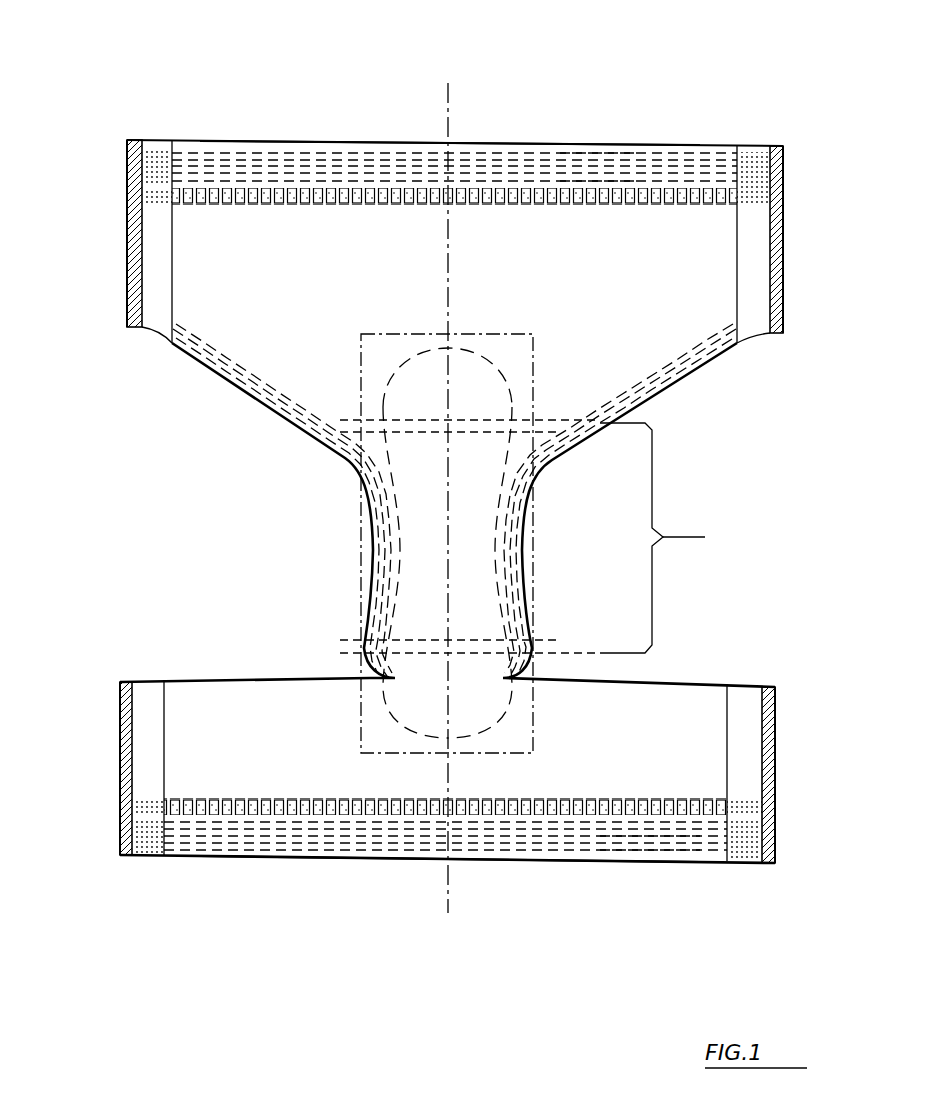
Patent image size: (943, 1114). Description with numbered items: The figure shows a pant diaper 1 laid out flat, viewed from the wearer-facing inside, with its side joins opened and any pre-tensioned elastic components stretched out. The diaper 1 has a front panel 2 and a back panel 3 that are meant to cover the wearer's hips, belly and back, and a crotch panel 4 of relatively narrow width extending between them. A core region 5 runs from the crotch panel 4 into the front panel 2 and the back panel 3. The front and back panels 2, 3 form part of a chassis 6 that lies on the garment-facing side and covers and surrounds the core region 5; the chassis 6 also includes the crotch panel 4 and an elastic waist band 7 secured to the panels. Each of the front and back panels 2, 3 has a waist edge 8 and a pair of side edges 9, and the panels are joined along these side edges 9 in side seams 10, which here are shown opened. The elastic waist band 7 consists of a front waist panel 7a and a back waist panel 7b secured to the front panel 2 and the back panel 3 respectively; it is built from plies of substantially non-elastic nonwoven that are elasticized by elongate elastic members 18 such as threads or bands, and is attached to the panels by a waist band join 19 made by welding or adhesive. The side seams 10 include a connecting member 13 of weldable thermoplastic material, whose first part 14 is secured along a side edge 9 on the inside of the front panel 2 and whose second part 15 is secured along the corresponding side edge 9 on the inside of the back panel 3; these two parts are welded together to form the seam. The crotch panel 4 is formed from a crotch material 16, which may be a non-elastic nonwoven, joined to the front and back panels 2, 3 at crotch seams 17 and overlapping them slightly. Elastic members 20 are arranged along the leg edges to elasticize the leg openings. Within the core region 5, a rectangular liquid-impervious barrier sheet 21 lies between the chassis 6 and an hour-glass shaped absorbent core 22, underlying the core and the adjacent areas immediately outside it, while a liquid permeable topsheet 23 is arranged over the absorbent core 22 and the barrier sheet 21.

The pant diaper 1 is at (746, 66).
The front panel 2 is at (600, 780).
The back panel 3 is at (655, 240).
The crotch panel 4 is at (652, 538).
The core region 5 is at (520, 356).
The chassis 6 is at (220, 313).
The elastic waist band 7 is at (211, 148).
The front waist panel 7a is at (210, 842).
The back waist panel 7b is at (491, 160).
The waist edge 8 is at (260, 130).
The side edges 9 is at (118, 190).
The side seams 10 is at (130, 152).
The connecting member 13 is at (160, 232).
The first part 14 is at (150, 788).
The second part 15 is at (150, 278).
The crotch material 16 is at (340, 485).
The crotch seams 17 is at (345, 440).
The elastic members 18 is at (612, 172).
The waist band join 19 is at (290, 203).
The elastic members 20 is at (212, 378).
The liquid-impervious barrier sheet 21 is at (382, 720).
The absorbent core 22 is at (480, 590).
The liquid permeable topsheet 23 is at (435, 565).